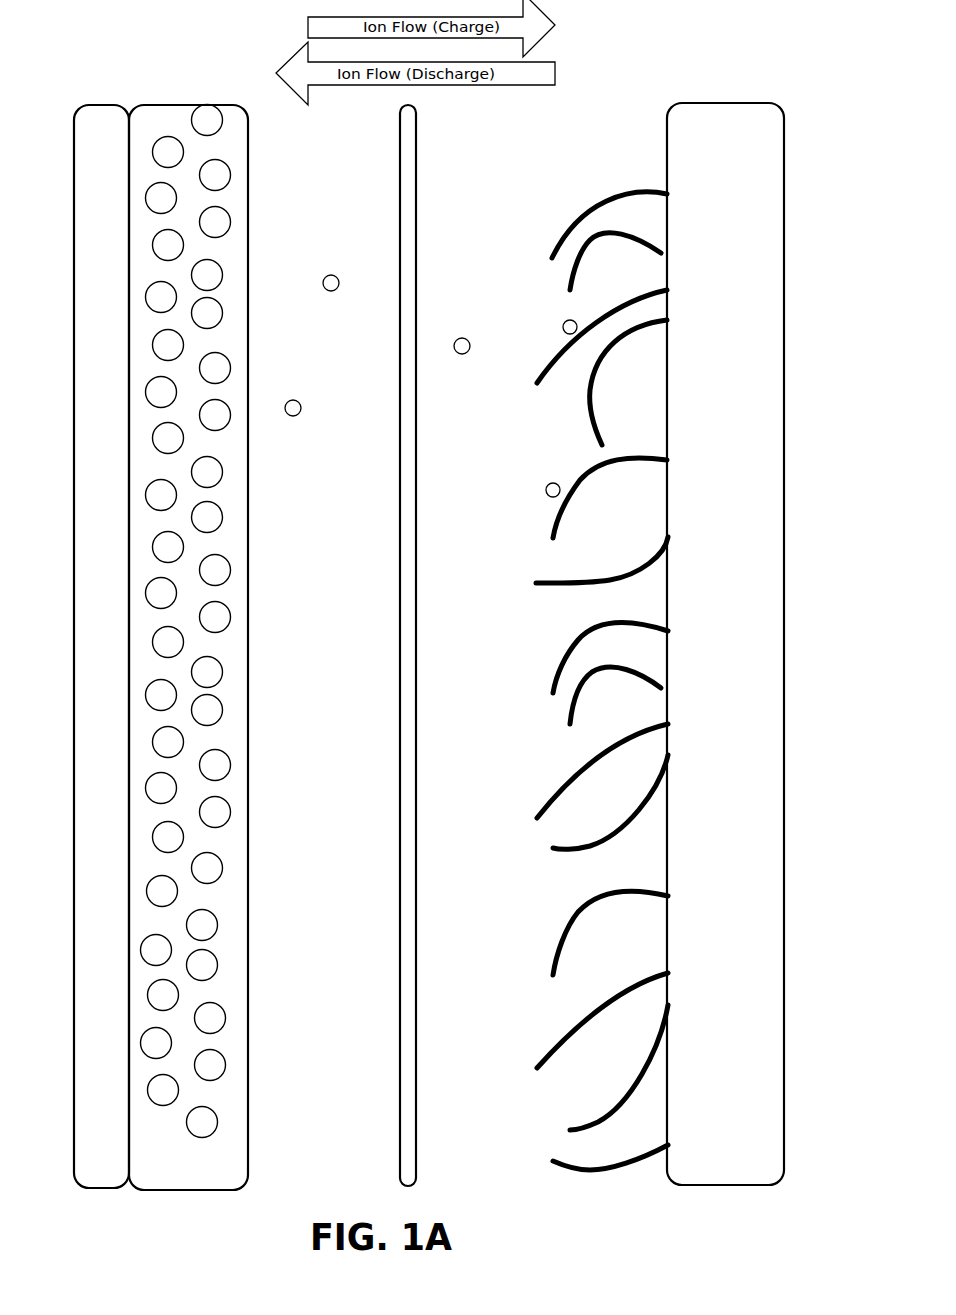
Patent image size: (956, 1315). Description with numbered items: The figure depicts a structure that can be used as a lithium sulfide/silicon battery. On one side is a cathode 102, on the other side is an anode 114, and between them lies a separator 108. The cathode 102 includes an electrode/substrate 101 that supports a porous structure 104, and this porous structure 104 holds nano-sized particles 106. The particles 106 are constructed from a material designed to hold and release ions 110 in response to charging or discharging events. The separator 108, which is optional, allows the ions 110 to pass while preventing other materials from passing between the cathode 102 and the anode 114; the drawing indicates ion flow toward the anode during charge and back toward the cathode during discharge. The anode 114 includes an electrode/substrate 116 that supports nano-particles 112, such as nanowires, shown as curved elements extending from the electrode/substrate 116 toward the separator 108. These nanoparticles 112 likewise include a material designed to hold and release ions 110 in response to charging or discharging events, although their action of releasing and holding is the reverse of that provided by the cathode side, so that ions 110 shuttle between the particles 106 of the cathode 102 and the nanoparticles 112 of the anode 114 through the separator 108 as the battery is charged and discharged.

The electrode/substrate 101 is at (90, 105).
The cathode 102 is at (170, 48).
The porous structure 104 is at (229, 105).
The nano-sized particles 106 is at (216, 171).
The separator 108 is at (405, 106).
The ions 110 is at (462, 338).
The nano-particles (nanowires) 112 is at (596, 188).
The anode 114 is at (742, 47).
The electrode/substrate 116 is at (758, 108).